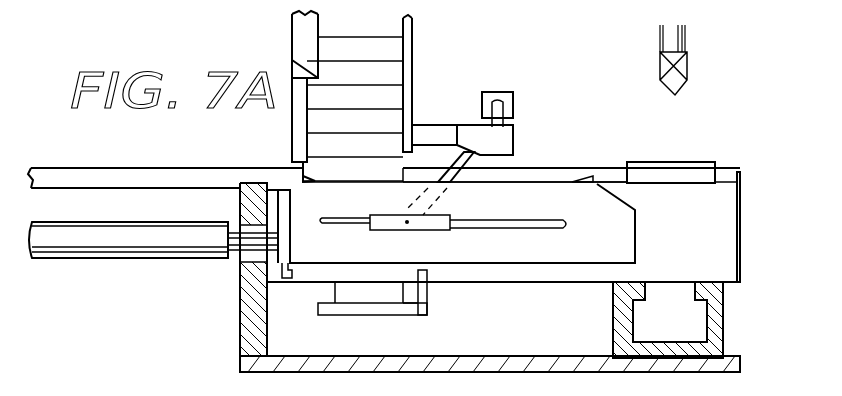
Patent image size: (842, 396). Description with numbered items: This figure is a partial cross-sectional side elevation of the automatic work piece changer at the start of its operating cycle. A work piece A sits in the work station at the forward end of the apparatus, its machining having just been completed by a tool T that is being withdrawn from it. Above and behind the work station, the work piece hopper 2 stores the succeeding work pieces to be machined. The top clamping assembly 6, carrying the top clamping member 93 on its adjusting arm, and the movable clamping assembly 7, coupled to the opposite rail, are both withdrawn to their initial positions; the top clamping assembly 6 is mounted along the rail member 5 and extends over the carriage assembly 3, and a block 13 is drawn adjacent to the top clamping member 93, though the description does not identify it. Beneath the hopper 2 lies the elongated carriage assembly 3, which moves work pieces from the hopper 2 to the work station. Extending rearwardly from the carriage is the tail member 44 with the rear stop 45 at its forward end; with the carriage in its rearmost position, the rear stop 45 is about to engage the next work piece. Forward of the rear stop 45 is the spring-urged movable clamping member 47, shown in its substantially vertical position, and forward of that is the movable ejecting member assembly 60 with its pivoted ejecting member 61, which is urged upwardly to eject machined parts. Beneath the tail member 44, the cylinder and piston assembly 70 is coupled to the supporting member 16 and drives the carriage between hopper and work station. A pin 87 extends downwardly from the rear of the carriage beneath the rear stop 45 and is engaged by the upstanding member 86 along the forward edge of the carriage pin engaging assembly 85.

The work piece hopper 2 is at (418, 62).
The feed block 13 is at (427, 137).
The top clamping assembly 6 is at (506, 75).
The top clamping member 93 is at (504, 140).
The movable clamping member 47 is at (468, 170).
The rear stop 45 is at (316, 184).
The tail member 44 is at (176, 168).
The cylinder and piston assembly 70 is at (209, 265).
The supporting member 16 is at (240, 312).
The pin 87 is at (286, 279).
The carriage pin engaging assembly 85 is at (375, 320).
The upstanding member 86 is at (428, 293).
The carriage assembly 3 is at (649, 241).
The movable ejecting member assembly 60 is at (563, 168).
The movable ejecting member 61 is at (592, 178).
The rail member 5 is at (730, 268).
The movable clamping assembly 7 is at (736, 343).
The work piece A is at (671, 172).
The tool T is at (672, 42).